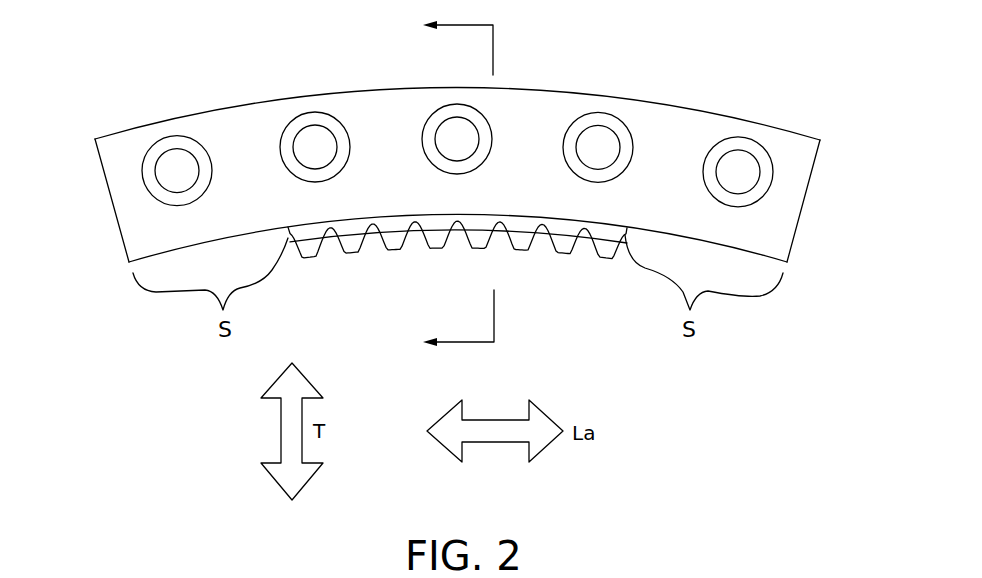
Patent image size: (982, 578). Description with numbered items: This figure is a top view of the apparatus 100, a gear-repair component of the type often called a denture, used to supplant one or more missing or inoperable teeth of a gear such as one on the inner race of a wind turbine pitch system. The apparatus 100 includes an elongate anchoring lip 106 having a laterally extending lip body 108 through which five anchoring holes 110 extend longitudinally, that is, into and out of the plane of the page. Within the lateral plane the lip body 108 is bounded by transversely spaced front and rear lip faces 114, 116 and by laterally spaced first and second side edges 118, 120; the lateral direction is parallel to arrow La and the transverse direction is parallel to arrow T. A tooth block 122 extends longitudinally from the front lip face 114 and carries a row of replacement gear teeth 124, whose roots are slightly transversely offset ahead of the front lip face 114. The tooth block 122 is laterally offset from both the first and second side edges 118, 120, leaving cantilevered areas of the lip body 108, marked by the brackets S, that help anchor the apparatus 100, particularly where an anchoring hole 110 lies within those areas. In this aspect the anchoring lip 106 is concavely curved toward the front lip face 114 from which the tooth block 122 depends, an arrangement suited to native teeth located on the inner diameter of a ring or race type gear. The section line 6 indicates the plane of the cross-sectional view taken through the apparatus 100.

The apparatus 100 is at (812, 50).
The anchoring lip 106 is at (236, 96).
The lip body 108 is at (378, 117).
The anchoring hole 110 is at (599, 143).
The front lip face 114 is at (167, 253).
The rear lip face 116 is at (152, 125).
The first side edge 118 is at (110, 200).
The second side edge 120 is at (806, 200).
The tooth block 122 is at (398, 274).
The replacement gear tooth 124 is at (518, 255).
The section line 6- 6 is at (467, 182).